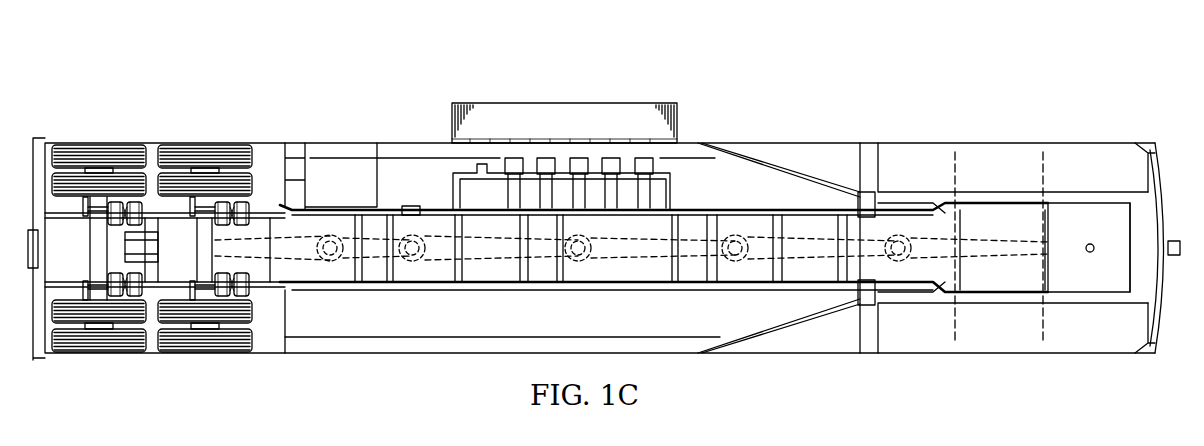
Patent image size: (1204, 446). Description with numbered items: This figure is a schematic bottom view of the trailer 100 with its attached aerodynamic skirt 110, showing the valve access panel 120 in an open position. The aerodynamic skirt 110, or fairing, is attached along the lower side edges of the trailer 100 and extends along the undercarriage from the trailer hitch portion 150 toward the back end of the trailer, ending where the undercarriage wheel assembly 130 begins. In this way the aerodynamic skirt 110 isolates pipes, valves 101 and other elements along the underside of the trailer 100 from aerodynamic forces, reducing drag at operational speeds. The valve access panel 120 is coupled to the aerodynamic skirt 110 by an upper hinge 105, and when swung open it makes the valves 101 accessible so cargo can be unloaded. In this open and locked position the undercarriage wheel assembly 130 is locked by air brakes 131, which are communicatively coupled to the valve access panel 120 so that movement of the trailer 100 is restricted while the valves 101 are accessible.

The trailer 100 is at (604, 221).
The valves 101 is at (610, 160).
The upper hinge 105 is at (565, 139).
The aerodynamic skirt 110 is at (770, 166).
The valve access panel 120 is at (490, 103).
The undercarriage wheel assembly 130 is at (252, 82).
The air brakes 131 is at (137, 203).
The trailer hitch portion 150 is at (1152, 368).